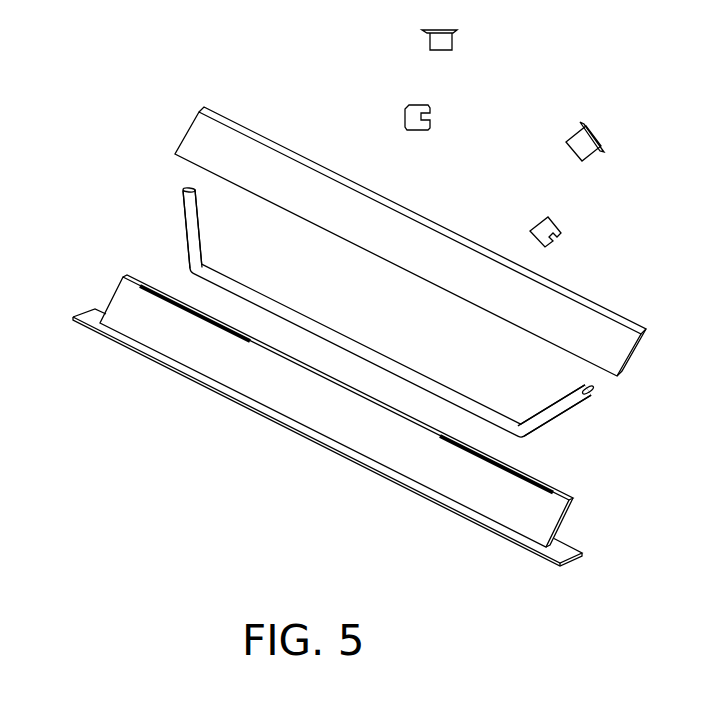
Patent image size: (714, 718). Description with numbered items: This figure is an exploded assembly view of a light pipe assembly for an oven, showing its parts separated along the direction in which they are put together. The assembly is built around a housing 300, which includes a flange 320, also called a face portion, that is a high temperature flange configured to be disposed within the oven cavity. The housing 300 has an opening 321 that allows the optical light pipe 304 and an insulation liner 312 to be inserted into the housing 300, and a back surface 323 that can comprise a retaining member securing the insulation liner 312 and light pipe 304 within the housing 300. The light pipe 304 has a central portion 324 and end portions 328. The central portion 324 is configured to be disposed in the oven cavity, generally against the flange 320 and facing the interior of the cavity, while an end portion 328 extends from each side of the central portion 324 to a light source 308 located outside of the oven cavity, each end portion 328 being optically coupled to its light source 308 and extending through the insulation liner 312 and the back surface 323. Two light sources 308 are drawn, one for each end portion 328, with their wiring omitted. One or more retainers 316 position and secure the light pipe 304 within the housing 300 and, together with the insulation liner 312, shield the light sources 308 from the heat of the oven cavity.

The housing 300 is at (330, 397).
The optical light pipe 304 is at (323, 305).
The light source 308 is at (428, 37).
The insulation liner 312 is at (193, 121).
The retainer 316 is at (405, 112).
The flange 320 is at (112, 337).
The opening 321 is at (537, 475).
The back surface 323 is at (567, 497).
The central portion 324 is at (352, 338).
The end portion 328 is at (200, 200).